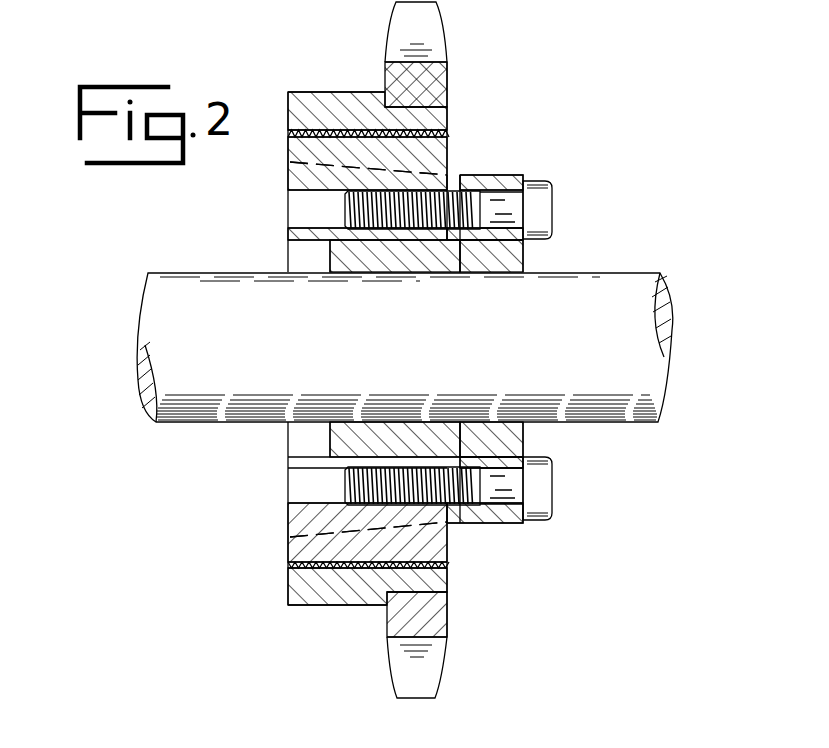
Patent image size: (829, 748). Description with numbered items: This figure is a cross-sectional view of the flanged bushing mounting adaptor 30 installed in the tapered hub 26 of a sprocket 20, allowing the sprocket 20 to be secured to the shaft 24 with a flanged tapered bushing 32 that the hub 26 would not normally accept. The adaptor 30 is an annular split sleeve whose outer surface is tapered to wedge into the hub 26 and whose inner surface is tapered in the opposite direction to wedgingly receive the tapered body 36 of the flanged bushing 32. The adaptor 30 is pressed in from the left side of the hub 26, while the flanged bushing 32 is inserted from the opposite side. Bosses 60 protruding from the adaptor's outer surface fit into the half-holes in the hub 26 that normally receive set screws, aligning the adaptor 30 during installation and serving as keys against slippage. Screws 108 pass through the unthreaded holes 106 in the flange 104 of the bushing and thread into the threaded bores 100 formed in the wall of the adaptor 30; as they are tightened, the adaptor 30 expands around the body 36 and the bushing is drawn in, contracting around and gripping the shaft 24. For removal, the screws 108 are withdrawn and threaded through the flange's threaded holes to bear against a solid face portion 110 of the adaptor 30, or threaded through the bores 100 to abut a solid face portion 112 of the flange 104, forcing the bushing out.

The sprocket 20 is at (446, 30).
The shaft 24 is at (657, 424).
The hub 26 is at (318, 100).
The flanged bushing mounting adaptor 30 is at (292, 172).
The flanged tapered bushing 32 is at (524, 449).
The body of the flanged bushing 36 is at (316, 436).
The bosses 60 is at (292, 147).
The threaded bores 100 is at (312, 228).
The flange 104 is at (516, 177).
The unthreaded holes 106 is at (497, 197).
The screws 108 is at (554, 220).
The solid face portion of the adaptor 110 is at (455, 182).
The solid face portion of the flange 112 is at (457, 523).